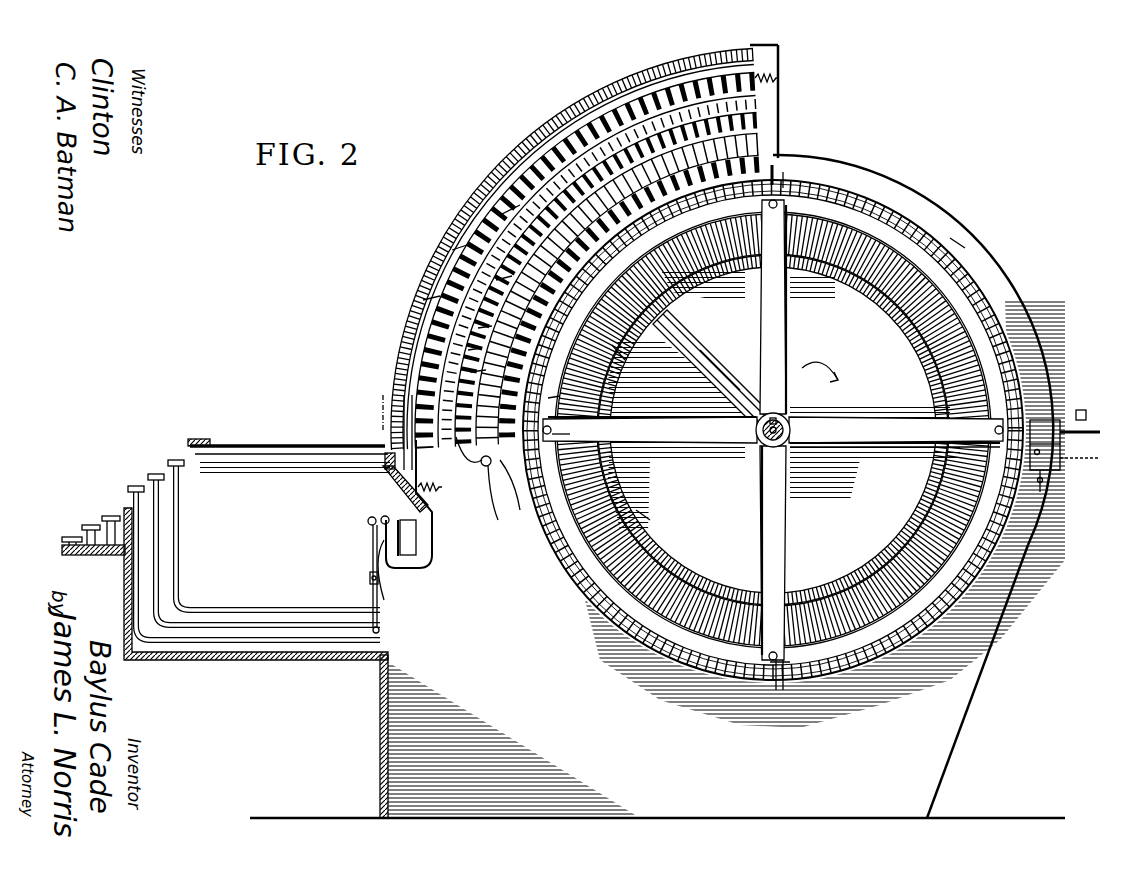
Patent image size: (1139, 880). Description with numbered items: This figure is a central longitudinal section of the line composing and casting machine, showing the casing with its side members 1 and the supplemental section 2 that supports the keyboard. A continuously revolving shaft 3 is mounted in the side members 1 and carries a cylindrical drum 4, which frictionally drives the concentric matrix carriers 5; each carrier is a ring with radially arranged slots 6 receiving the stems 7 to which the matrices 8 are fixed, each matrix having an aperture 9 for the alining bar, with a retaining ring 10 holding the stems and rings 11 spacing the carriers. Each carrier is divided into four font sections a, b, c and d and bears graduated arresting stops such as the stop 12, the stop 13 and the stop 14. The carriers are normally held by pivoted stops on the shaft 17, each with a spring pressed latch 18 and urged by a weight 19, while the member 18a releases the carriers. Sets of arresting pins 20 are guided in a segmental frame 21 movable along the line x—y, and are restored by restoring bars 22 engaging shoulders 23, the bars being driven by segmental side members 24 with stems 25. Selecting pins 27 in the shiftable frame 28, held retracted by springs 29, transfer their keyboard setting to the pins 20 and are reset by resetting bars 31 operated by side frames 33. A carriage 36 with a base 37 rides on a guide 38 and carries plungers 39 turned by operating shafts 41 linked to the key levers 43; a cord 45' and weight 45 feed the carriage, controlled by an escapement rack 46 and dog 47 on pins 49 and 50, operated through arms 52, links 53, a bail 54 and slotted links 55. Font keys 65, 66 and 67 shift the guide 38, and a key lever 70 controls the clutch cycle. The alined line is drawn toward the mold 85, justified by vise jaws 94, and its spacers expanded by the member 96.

The side members 1 is at (963, 718).
The supplemental section 2 is at (232, 662).
The continuously revolving shaft 3 is at (782, 424).
The cylindrical drum 4 is at (935, 418).
The matrix carriers 5 is at (790, 600).
The radially arranged slots 6 is at (948, 440).
The stems 7 is at (948, 448).
The matrices 8 is at (1016, 362).
The aperture 9 is at (960, 290).
The retaining ring 10 is at (462, 212).
The rings 11 is at (680, 525).
The arresting stop 12 is at (572, 437).
The arresting stop 13 is at (776, 170).
The arresting stop 14 is at (1050, 428).
The shaft 17 is at (499, 493).
The spring pressed latch 18 is at (470, 427).
The member 18a is at (462, 466).
The weight 19 is at (516, 500).
The stop pins 20 is at (765, 133).
The segmental frame 21 is at (762, 158).
The restoring bars 22 is at (786, 176).
The shoulders 23 is at (478, 328).
The segmental side members 24 is at (548, 398).
The stems 25 is at (690, 356).
The selecting pins 27 is at (468, 350).
The frame 28 is at (496, 280).
The springs 29 is at (798, 80).
The resetting bars 31 is at (720, 378).
The side frames 33 is at (762, 108).
The carriage 36 is at (423, 300).
The base 37 is at (470, 372).
The guide 38 is at (384, 472).
The plungers 39 is at (500, 215).
The operating shaft 41 is at (452, 250).
The key levers 43 is at (262, 616).
The weight 45 is at (762, 699).
The cord 45' is at (362, 448).
The rack 46 is at (395, 570).
The escapement dog 47 is at (396, 546).
The pin 49 is at (381, 516).
The pin 50 is at (413, 538).
The operating arms 52 is at (368, 524).
The links 53 is at (370, 540).
The bail 54 is at (368, 576).
The slotted links 55 is at (372, 634).
The key 65 is at (110, 517).
The key 66 is at (88, 526).
The key 67 is at (66, 538).
The key lever 70 is at (210, 439).
The mold 85 is at (1100, 432).
The vise jaws 94 is at (1078, 416).
The member 96 is at (1086, 412).
The section a is at (612, 378).
The section b is at (950, 238).
The section c is at (1015, 560).
The section d is at (650, 520).
The line x-y x is at (500, 172).
The line x- y is at (790, 444).